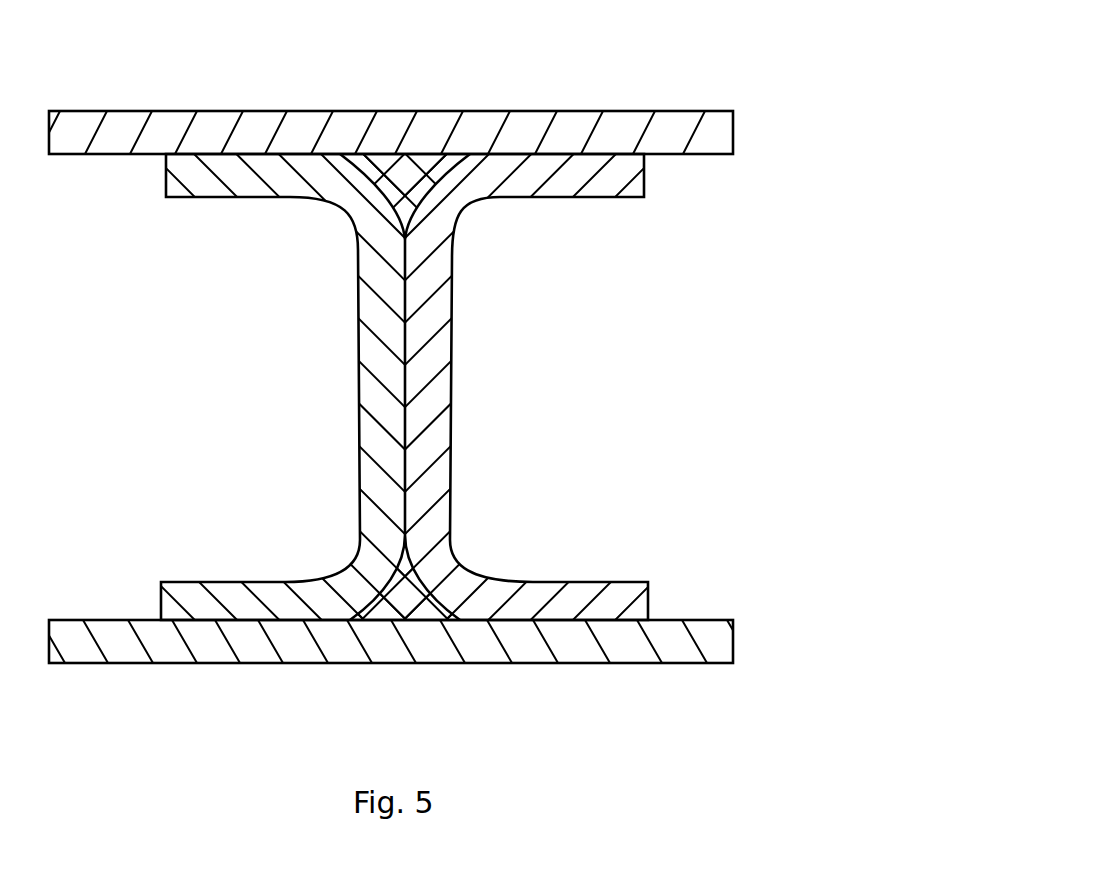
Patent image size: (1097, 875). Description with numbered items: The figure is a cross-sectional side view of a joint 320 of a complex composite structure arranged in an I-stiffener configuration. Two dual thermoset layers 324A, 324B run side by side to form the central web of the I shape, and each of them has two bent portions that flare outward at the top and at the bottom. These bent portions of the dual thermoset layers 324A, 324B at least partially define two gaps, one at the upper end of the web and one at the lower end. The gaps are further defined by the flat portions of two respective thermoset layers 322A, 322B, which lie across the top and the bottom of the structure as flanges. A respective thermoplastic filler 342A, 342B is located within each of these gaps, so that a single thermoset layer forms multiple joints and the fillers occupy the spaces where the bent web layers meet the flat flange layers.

The joint 320 is at (722, 298).
The thermoset layer 322A is at (687, 113).
The thermoset layer 322B is at (712, 665).
The dual thermoset layer 324A is at (358, 397).
The dual thermoset layer 324B is at (450, 400).
The thermoplastic filler 342A is at (385, 182).
The thermoplastic filler 342B is at (420, 580).